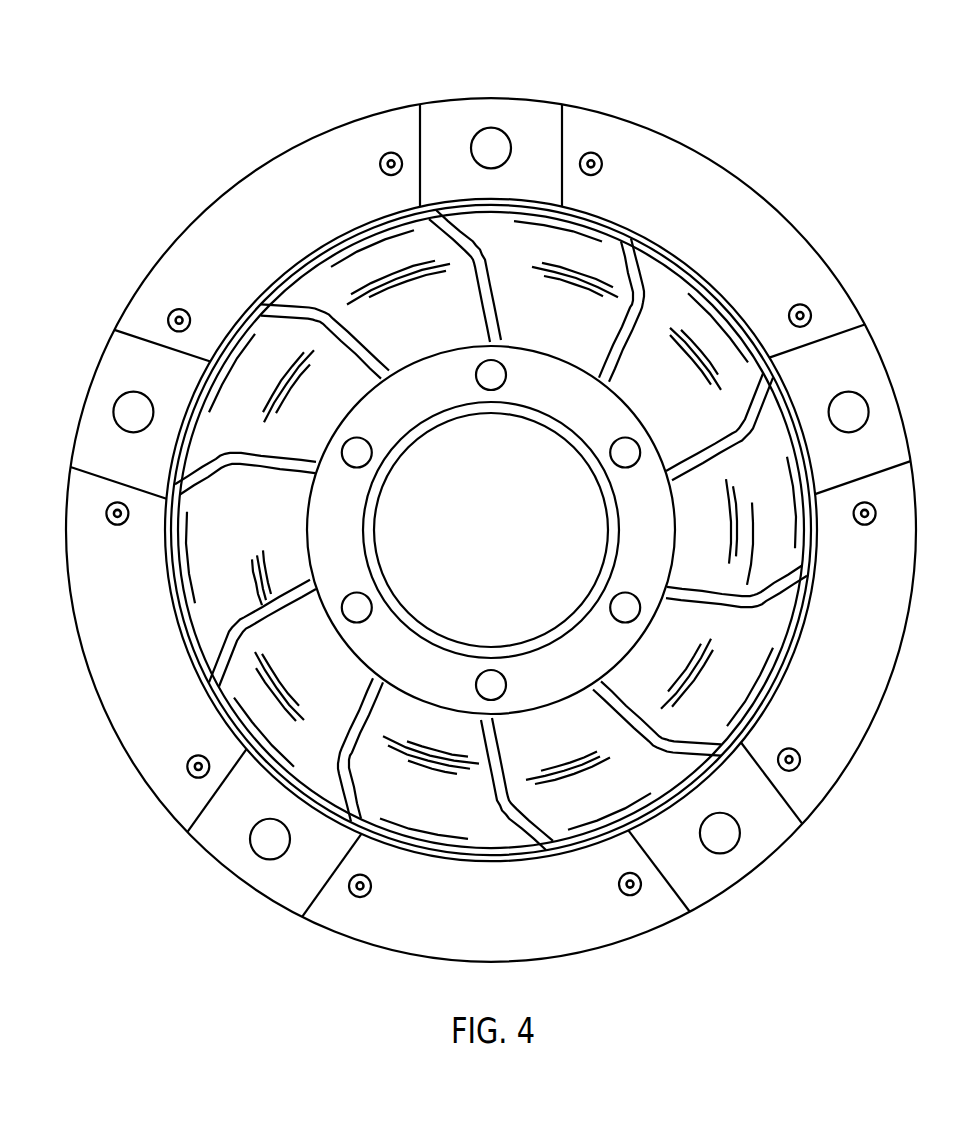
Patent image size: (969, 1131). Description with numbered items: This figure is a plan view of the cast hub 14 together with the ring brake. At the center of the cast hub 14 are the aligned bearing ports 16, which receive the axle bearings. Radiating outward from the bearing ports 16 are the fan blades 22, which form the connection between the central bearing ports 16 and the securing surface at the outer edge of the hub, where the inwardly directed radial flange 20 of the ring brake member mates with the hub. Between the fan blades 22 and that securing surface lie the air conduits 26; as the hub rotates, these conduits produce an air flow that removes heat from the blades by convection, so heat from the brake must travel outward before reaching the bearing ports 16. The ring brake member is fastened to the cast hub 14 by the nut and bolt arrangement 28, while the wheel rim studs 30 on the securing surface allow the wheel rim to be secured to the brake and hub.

The cast hub 14 is at (642, 380).
The bearing ports 16 is at (397, 605).
The radial flange 20 is at (583, 937).
The fan blades 22 is at (330, 316).
The air conduits 26 is at (276, 421).
The nut and bolt arrangement 28 is at (604, 152).
The wheel rim studs 30 is at (489, 136).